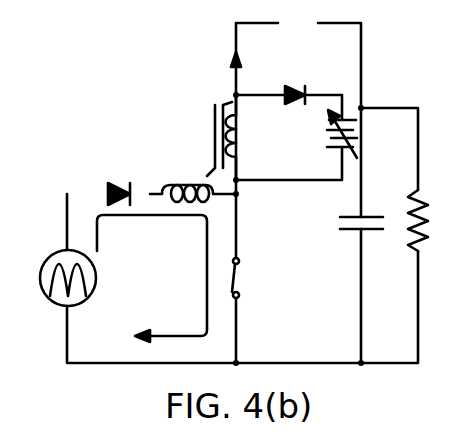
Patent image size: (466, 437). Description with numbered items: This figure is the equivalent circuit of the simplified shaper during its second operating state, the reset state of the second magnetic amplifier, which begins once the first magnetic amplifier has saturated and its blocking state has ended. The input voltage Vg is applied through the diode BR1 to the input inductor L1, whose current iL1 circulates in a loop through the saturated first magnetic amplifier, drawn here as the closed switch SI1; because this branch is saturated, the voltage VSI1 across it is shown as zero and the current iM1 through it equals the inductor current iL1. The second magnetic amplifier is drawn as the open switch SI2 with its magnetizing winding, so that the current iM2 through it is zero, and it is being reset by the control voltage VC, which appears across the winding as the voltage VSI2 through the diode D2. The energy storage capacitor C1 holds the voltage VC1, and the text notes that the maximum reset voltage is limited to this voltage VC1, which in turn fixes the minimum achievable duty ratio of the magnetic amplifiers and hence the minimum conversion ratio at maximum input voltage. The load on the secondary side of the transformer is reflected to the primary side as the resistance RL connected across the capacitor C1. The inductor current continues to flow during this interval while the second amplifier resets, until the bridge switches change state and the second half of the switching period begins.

The magnetizing current of second module (zero) iM2 is at (190, 40).
The input voltage Vg is at (133, 331).
The bridge rectifier diode BR1 is at (121, 184).
The input inductor L1 is at (193, 180).
The input inductor current iL1 is at (152, 278).
The voltage across switch SI1 (zero) VSI1 is at (172, 278).
The first switch SI1 is at (253, 278).
The current through switch equal to inductor current iM1 is at (289, 343).
The second switch with magnetizing inductance SI2 is at (201, 137).
The voltage across switch SI2 VSI2 is at (270, 132).
The output diode D2 is at (295, 82).
The control voltage VC is at (328, 144).
The capacitor voltage VC1 is at (390, 100).
The energy storage capacitor C1 is at (344, 212).
The load resistance RL is at (432, 220).